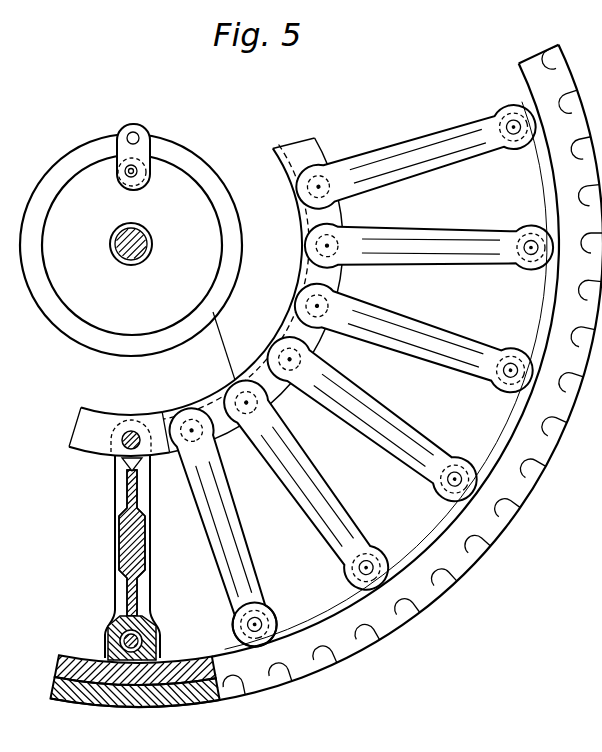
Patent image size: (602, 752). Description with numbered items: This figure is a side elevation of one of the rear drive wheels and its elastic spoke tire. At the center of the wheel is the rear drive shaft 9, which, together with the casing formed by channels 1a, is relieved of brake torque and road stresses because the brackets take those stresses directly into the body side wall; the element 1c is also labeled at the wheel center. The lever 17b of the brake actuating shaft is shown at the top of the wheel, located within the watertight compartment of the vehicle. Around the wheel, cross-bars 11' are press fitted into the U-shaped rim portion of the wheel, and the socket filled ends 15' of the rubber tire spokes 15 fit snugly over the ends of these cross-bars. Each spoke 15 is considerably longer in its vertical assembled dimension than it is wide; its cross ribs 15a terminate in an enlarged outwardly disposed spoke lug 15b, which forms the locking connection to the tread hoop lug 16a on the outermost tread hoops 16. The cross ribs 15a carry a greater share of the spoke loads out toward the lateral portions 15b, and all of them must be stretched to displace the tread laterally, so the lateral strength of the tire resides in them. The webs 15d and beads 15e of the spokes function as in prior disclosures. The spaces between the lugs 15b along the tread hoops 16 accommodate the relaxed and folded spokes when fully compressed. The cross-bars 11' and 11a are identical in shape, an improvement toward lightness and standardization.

The channels 1a is at (111, 240).
The disk rim 1c is at (121, 232).
The rear drive shaft 9 is at (152, 244).
The lever 17b is at (142, 130).
The cross-bars 11' is at (119, 421).
The socket filled ends 15' is at (252, 295).
The rubber tire spokes 15 is at (336, 376).
The cross ribs 15a is at (251, 558).
The spoke lug 15b is at (266, 612).
The webs 15d is at (141, 504).
The beads 15e is at (227, 543).
The tread hoops 16 is at (471, 560).
The tread hoop lug 16a is at (146, 620).
The cross-bars 11a is at (142, 641).